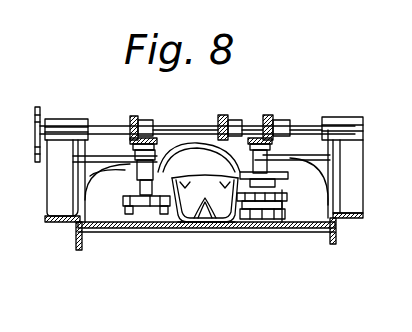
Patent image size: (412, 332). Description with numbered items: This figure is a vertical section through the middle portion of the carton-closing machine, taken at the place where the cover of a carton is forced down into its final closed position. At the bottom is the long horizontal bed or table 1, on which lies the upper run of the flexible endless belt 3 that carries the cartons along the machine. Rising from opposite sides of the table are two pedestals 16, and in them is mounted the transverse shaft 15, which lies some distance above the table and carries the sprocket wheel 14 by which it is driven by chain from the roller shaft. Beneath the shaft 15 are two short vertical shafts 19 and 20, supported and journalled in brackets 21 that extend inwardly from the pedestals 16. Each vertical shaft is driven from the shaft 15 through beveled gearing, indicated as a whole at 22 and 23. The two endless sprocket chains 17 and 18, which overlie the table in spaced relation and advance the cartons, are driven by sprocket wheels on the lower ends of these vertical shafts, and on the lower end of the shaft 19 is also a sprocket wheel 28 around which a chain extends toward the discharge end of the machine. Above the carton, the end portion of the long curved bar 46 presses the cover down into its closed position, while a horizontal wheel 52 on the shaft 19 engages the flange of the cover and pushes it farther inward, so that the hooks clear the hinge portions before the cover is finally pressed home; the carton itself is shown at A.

The bed or table 1 is at (150, 230).
The endless belt 3 is at (110, 228).
The sprocket wheel 14 is at (37, 107).
The transverse shaft 15 is at (176, 126).
The pedestals 16 is at (50, 183).
The sprocket chain 17 is at (296, 220).
The sprocket chain 18 is at (124, 204).
The vertical shaft 19 is at (287, 196).
The vertical shaft 20 is at (128, 181).
The brackets 21 is at (112, 166).
The beveled gearing 22 is at (270, 115).
The beveled gearing 23 is at (134, 116).
The sprocket wheel 28 is at (232, 220).
The bar 46 is at (203, 165).
The horizontal wheel 52 is at (284, 179).
The article A is at (200, 216).